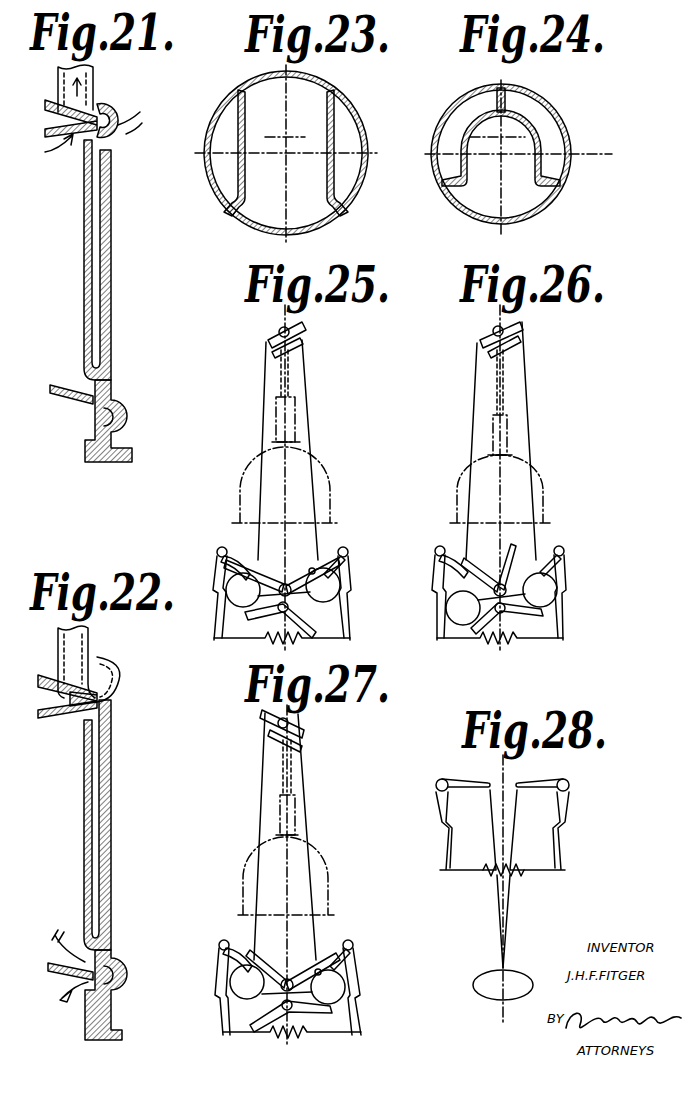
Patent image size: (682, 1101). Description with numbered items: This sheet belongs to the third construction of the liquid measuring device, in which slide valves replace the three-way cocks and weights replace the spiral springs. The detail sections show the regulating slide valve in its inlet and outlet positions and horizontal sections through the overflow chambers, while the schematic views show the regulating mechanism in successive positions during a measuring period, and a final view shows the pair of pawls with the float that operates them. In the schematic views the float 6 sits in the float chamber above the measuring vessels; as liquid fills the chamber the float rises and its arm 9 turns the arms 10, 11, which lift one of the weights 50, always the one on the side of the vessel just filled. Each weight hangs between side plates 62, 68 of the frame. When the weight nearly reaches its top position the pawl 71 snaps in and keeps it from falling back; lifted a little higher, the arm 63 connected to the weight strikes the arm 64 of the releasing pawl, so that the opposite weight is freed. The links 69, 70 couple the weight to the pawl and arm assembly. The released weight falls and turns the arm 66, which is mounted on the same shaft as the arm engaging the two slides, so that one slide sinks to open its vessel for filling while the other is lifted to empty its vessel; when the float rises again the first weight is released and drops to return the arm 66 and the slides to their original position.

In FIG. 26, the clamp 11 is at (482, 336).
In FIG. 26, the clamp member 10 is at (520, 332).
In FIG. 26, the rod 9 is at (503, 370).
In FIG. 25, the plate 62 is at (322, 481).
In FIG. 26, the plate 62 is at (528, 420).
In FIG. 27, the plate 62 is at (330, 875).
In FIG. 26, the plate 68 is at (472, 426).
In FIG. 26, the bulb 6 is at (541, 486).
In FIG. 26, the link 64 is at (450, 556).
In FIG. 26, the lever 63 is at (490, 576).
In FIG. 26, the pin 69 is at (515, 554).
In FIG. 26, the arm 70 is at (542, 574).
In FIG. 26, the roller 50 is at (466, 612).
In FIG. 26, the frame side 71 is at (566, 612).
In FIG. 26, the lower link 66 is at (488, 634).